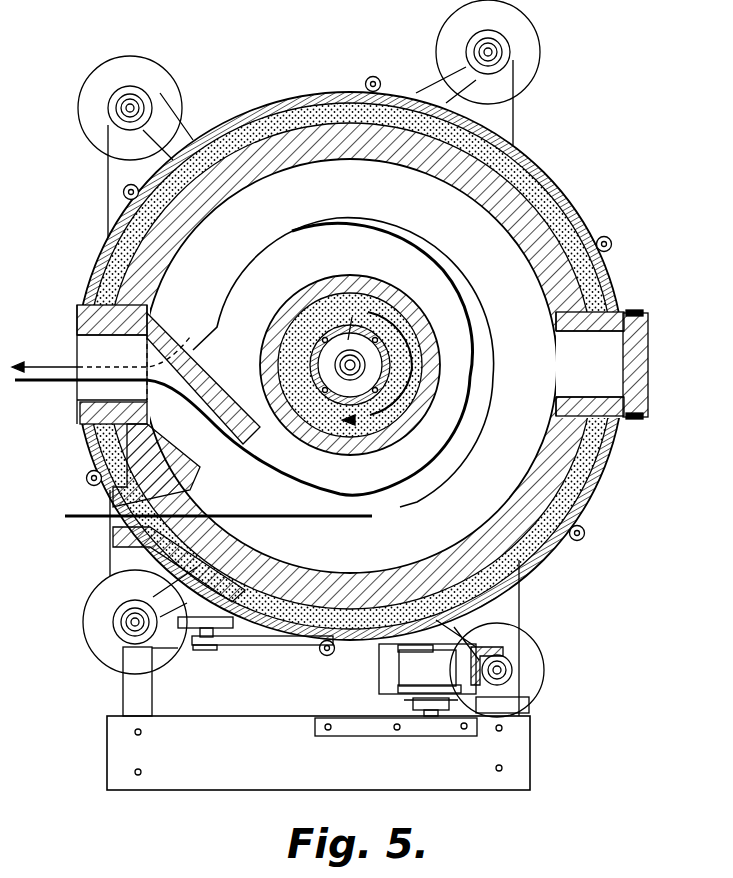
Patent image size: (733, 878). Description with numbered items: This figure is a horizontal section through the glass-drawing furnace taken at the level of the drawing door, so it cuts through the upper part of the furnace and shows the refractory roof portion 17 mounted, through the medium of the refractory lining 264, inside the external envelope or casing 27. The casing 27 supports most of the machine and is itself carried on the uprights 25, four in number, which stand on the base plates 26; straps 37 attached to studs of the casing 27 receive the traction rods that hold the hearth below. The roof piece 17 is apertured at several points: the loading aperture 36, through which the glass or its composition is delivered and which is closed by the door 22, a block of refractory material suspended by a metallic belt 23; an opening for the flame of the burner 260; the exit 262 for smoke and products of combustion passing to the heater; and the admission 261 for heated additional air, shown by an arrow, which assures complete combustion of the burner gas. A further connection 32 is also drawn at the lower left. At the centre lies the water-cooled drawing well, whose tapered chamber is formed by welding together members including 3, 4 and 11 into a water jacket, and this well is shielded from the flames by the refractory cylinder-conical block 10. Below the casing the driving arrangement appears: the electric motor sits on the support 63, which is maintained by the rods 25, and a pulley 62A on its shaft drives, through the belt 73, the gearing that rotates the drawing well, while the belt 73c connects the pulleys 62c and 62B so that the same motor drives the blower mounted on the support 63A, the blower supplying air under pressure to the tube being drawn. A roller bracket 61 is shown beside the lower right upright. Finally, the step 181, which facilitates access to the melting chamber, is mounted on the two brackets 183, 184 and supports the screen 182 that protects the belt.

The water jacket member 3 is at (352, 317).
The water jacket member 4 is at (320, 340).
The refractory cylinder-conical block 10 is at (434, 373).
The water jacket member 11 is at (315, 418).
The refractory roof portion 17 is at (529, 203).
The door 22 is at (646, 348).
The metallic belt 23 is at (639, 313).
The uprights 25 is at (143, 100).
The base plates 26 is at (90, 93).
The external envelope or casing 27 is at (330, 89).
The bottom pipe 32 is at (125, 533).
The loading aperture 36 is at (608, 377).
The straps 37 is at (580, 527).
The roller bracket 61 is at (470, 646).
The pulley 62c is at (208, 648).
The pulley 62B is at (403, 652).
The pulley 62A is at (441, 704).
The support 63 is at (386, 683).
The support 63A is at (165, 660).
The belt 73 is at (406, 704).
The belt 73c is at (270, 638).
The step 181 is at (518, 742).
The screen 182 is at (315, 720).
The bracket 183 is at (133, 683).
The bracket 184 is at (499, 703).
The burner 260 is at (211, 502).
The additional air admission 261 is at (244, 359).
The smoke exit 262 is at (136, 406).
The refractory lining 264 is at (586, 277).